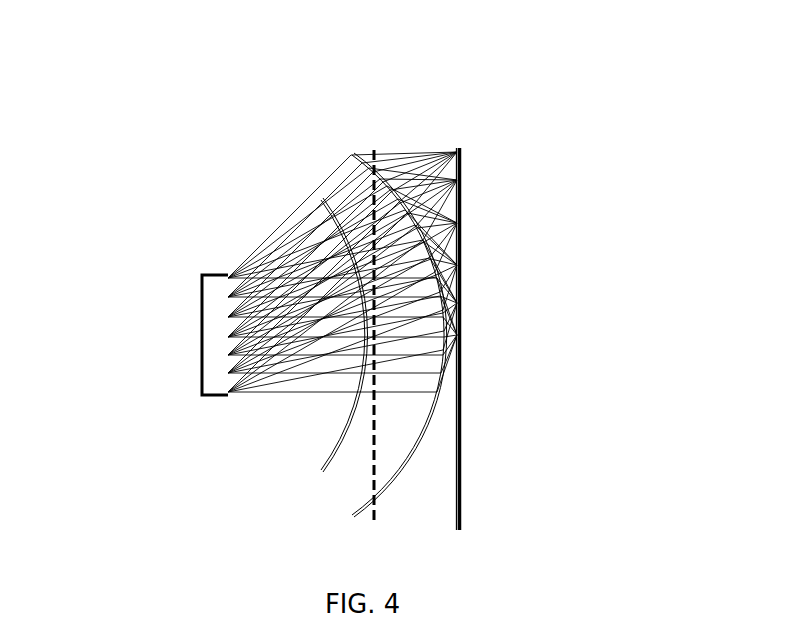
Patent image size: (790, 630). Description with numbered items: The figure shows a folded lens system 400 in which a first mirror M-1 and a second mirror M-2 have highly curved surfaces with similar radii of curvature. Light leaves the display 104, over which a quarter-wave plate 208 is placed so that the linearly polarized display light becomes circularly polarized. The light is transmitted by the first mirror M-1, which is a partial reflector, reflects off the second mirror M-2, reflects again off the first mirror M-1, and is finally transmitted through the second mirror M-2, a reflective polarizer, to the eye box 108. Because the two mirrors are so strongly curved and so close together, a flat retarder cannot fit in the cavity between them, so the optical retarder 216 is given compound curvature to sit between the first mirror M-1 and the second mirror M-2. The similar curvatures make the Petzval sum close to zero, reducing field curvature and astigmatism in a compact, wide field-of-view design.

The lens system 400 is at (304, 136).
The optical retarder 216 is at (376, 150).
The display 104 is at (462, 424).
The quarter-wave plate 208 is at (459, 516).
The eye box 108 is at (201, 331).
The first mirror M-1 is at (416, 432).
The second mirror M-2 is at (339, 452).